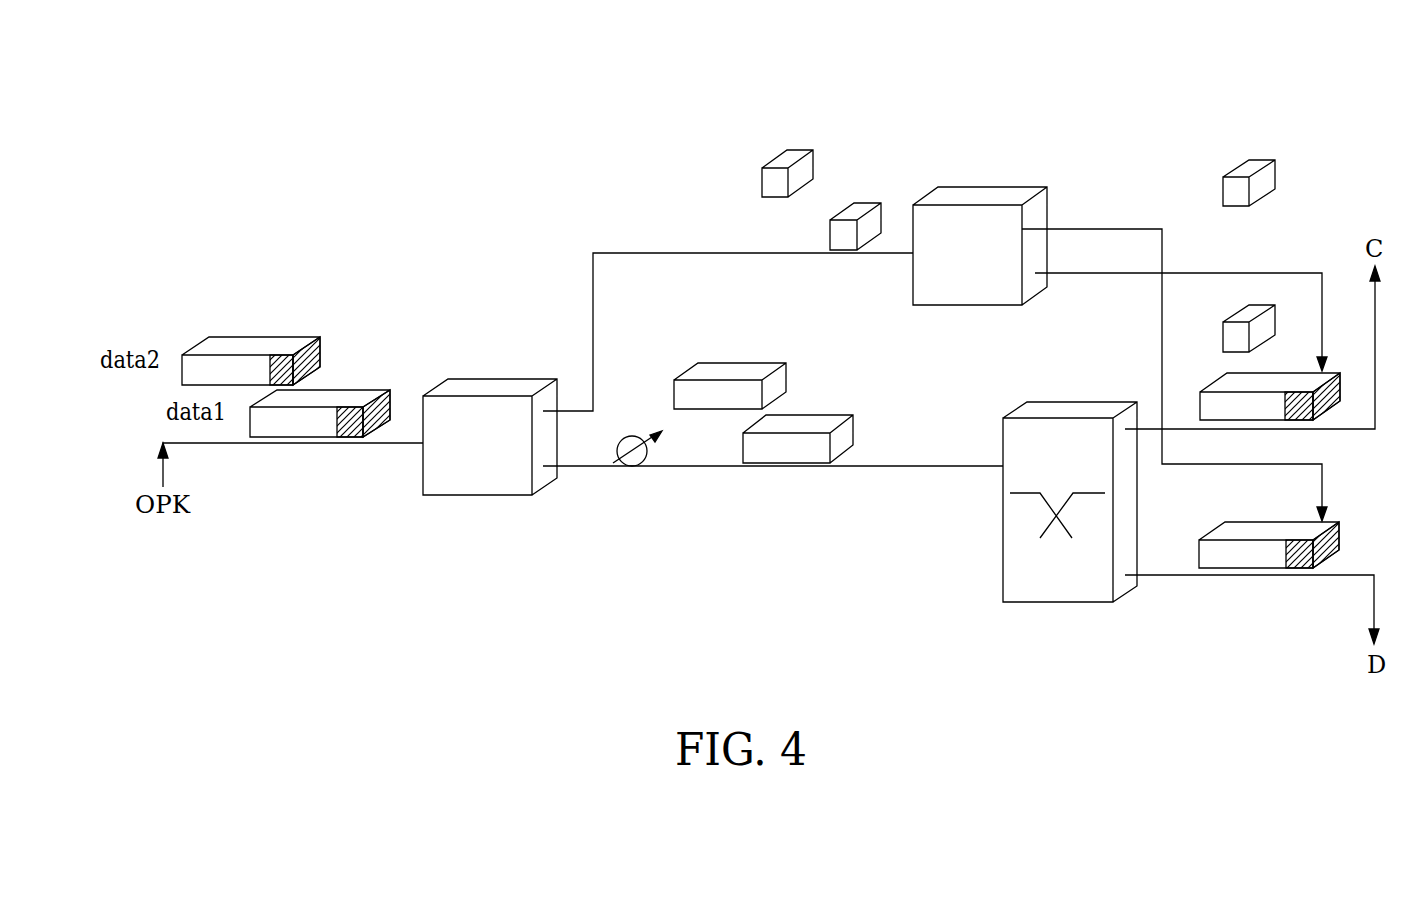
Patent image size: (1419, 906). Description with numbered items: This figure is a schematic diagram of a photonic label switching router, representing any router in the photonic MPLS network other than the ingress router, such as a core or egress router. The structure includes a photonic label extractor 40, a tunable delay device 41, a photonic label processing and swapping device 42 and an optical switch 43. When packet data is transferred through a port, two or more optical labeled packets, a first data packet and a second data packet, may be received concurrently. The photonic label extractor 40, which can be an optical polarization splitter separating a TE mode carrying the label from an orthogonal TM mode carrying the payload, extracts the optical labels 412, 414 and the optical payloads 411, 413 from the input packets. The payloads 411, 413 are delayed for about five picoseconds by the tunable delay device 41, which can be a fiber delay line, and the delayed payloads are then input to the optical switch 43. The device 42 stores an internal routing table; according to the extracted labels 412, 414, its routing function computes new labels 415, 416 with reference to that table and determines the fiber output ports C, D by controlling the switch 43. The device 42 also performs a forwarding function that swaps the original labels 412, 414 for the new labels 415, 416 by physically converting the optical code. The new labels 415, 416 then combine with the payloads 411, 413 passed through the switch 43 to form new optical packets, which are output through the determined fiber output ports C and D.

The photonic label extractor 40 is at (505, 378).
The tunable delay device 41 is at (634, 436).
The photonic label processing and swapping device 42 is at (993, 186).
The optical switch 43 is at (1055, 605).
The optical payload 411 is at (340, 390).
The optical label 412 is at (385, 390).
The optical payload 413 is at (243, 337).
The optical label 414 is at (305, 337).
The new label 415 is at (1258, 160).
The new label 416 is at (1258, 305).